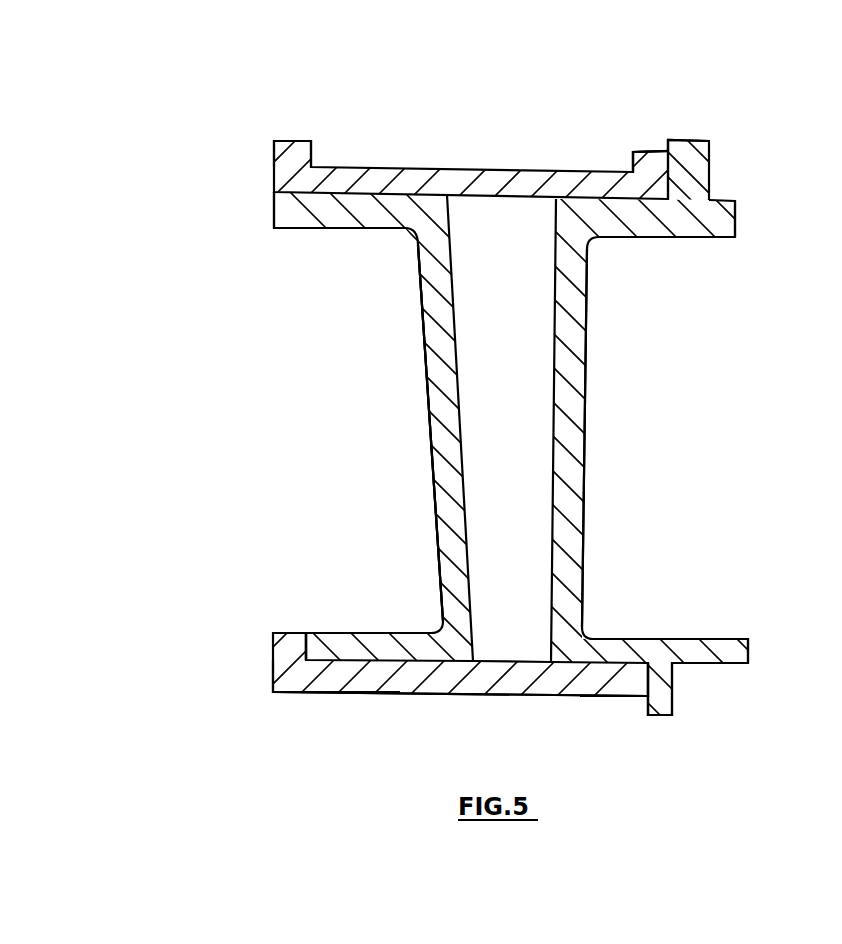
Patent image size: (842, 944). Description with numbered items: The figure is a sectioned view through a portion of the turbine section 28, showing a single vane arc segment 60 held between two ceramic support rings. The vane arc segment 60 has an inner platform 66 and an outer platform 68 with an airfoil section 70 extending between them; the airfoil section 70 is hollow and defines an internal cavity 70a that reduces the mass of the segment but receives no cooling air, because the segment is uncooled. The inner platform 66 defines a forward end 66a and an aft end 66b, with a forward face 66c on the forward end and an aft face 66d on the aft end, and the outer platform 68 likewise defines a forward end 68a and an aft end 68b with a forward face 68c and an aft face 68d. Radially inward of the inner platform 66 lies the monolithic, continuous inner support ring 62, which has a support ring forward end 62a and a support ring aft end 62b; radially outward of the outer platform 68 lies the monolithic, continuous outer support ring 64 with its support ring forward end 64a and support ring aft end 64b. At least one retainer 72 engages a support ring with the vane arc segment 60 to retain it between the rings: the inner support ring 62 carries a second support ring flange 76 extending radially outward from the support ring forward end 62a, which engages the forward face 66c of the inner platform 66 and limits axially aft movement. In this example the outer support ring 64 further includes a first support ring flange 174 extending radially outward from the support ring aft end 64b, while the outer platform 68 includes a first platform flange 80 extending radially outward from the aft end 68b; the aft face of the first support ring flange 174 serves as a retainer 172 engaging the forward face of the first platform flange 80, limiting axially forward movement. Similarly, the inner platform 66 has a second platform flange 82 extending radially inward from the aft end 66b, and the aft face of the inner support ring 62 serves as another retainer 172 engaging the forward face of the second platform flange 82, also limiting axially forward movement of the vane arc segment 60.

The turbine section 28 is at (164, 669).
The vane arc segment 60 is at (342, 400).
The inner support ring 62 is at (393, 686).
The support ring forward end 62a is at (290, 708).
The support ring aft end 62b is at (624, 710).
The outer support ring 64 is at (398, 177).
The support ring forward end 64a is at (323, 147).
The support ring aft end 64b is at (616, 161).
The inner platform 66 is at (377, 643).
The forward end 66a is at (323, 620).
The aft end 66b is at (732, 622).
The forward face 66c is at (303, 633).
The aft face 66d is at (750, 650).
The outer platform 68 is at (333, 220).
The forward end 68a is at (286, 236).
The aft end 68b is at (684, 246).
The forward face 68c is at (273, 209).
The aft face 68d is at (737, 227).
The airfoil section 70 is at (417, 461).
The internal cavity 70a is at (556, 436).
The retainer 72 is at (255, 683).
The second support ring flange 76 is at (285, 653).
The first platform flange 80 is at (702, 165).
The second platform flange 82 is at (660, 697).
The retainer 172 is at (664, 132).
The first support ring flange 174 is at (637, 151).